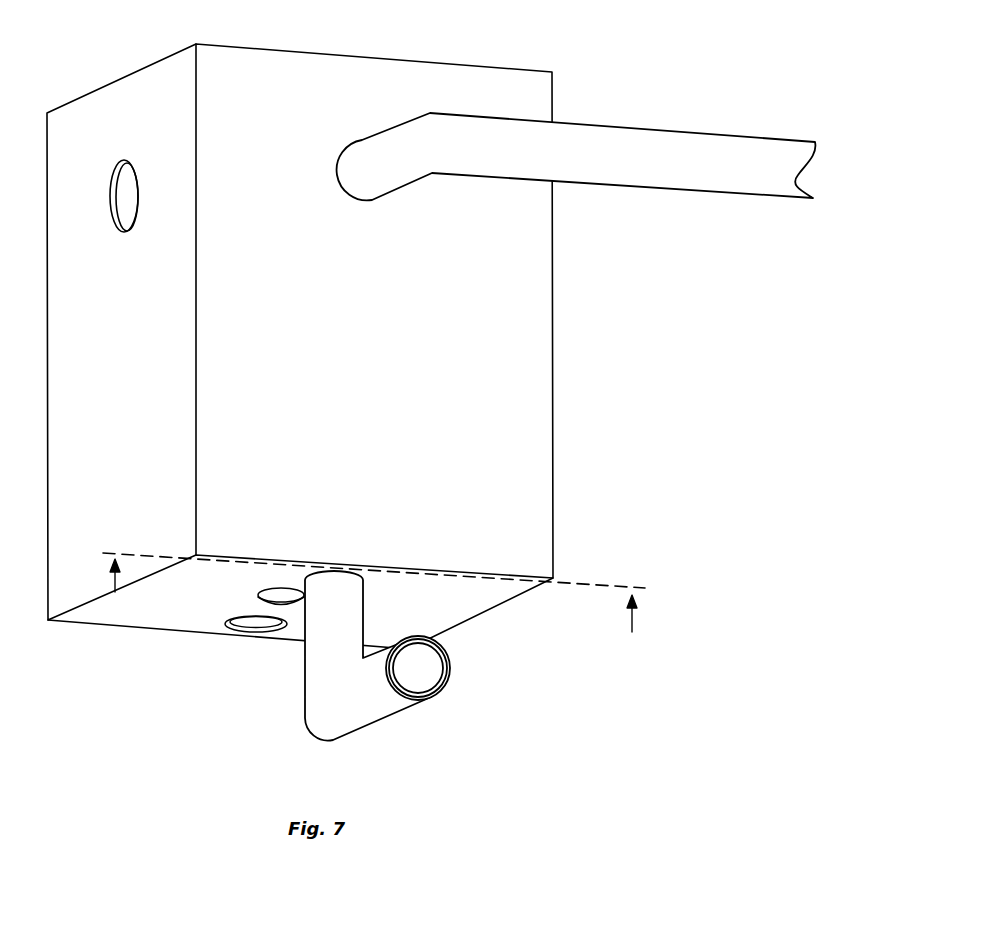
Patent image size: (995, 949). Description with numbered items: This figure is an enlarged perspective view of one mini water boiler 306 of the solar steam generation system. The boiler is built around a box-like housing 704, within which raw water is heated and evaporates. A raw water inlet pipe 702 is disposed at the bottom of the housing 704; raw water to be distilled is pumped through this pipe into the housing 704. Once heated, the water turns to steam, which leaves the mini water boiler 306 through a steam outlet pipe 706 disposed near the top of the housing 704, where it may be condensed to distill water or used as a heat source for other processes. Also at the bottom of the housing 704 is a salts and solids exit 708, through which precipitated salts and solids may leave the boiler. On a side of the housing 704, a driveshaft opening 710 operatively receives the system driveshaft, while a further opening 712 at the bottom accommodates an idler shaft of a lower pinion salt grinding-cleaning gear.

The mini water boiler 306 is at (431, 386).
The raw water inlet pipe 702 is at (377, 708).
The housing 704 is at (533, 295).
The steam outlet pipe 706 is at (577, 130).
The salts and solids exit 708 is at (243, 628).
The driveshaft opening 710 is at (125, 232).
The opening 712 is at (258, 597).